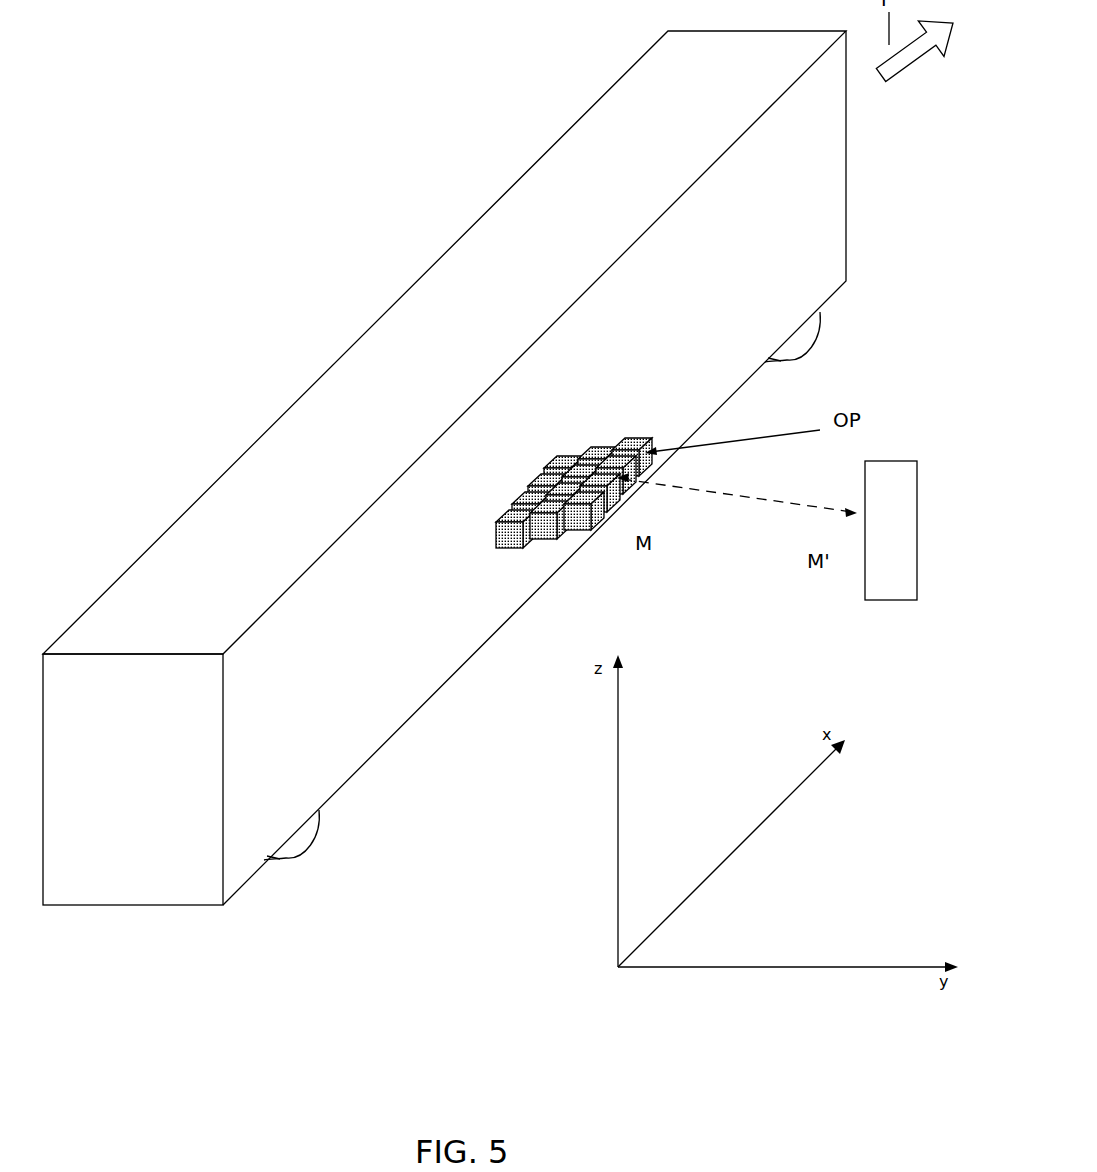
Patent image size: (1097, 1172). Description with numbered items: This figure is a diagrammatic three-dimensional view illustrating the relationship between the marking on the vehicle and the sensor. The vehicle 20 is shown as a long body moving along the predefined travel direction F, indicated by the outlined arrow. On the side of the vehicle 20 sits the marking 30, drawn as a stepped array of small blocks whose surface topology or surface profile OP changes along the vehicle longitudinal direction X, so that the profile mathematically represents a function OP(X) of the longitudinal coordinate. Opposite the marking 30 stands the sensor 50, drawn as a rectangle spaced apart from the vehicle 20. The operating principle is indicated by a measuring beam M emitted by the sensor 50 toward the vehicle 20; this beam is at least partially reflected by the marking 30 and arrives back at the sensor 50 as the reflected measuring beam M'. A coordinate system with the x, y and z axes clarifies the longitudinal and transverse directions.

The vehicle 20 is at (282, 412).
The marking 30 is at (488, 560).
The sensor 50 is at (889, 600).